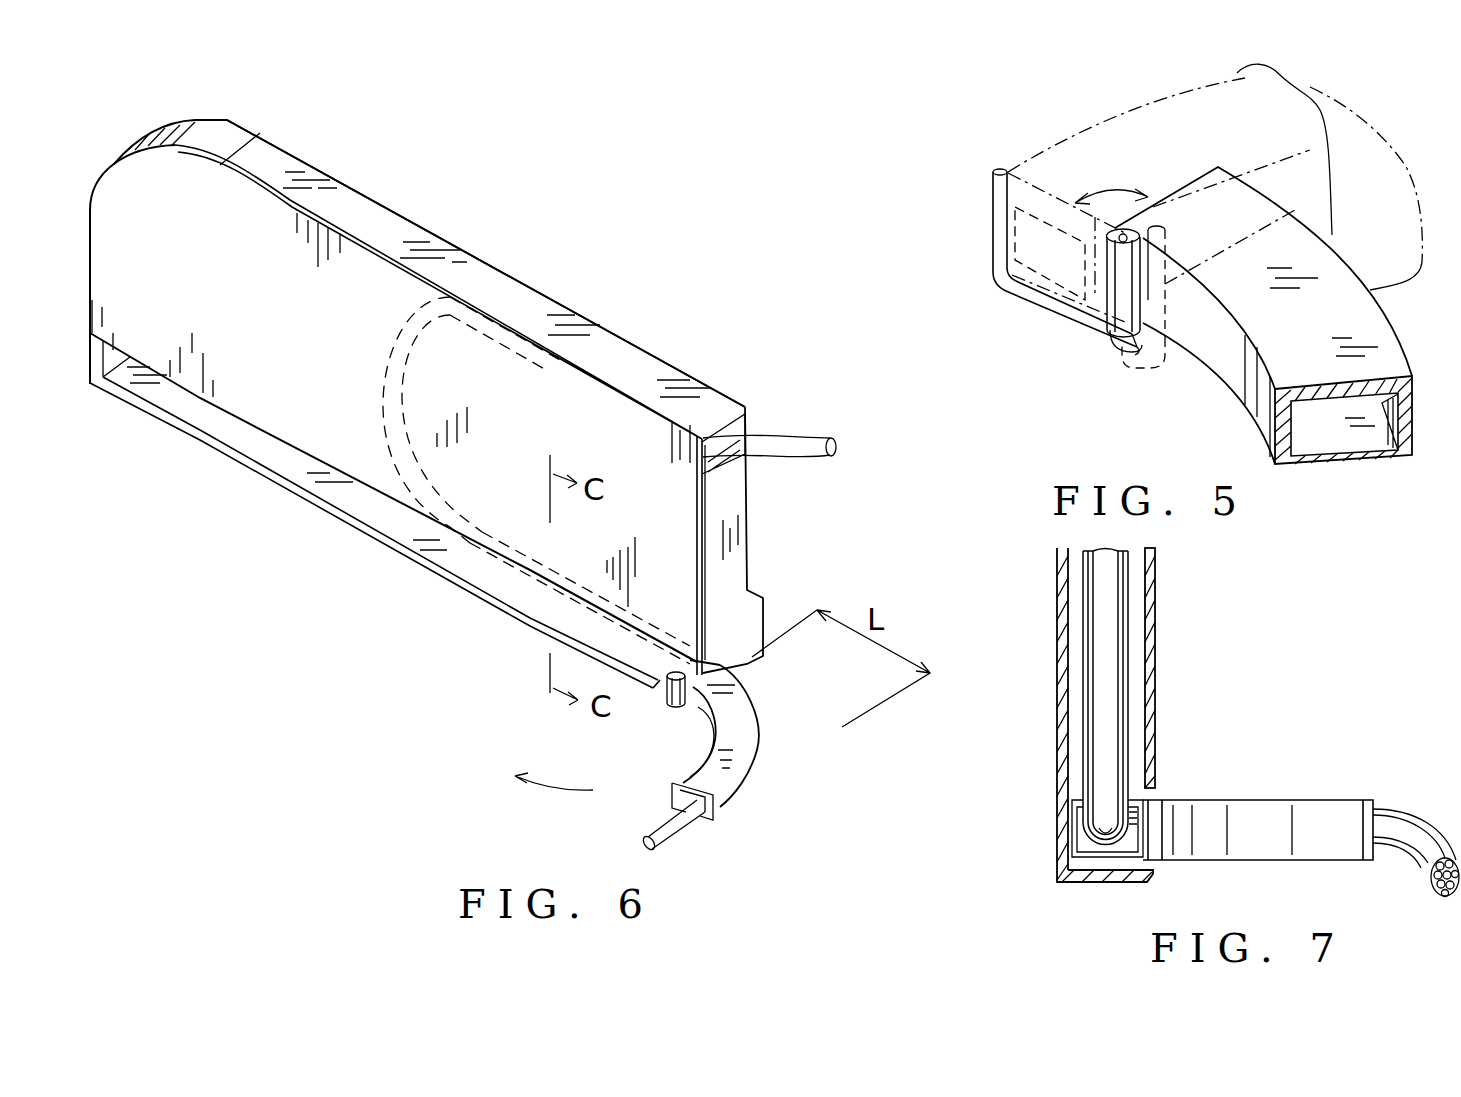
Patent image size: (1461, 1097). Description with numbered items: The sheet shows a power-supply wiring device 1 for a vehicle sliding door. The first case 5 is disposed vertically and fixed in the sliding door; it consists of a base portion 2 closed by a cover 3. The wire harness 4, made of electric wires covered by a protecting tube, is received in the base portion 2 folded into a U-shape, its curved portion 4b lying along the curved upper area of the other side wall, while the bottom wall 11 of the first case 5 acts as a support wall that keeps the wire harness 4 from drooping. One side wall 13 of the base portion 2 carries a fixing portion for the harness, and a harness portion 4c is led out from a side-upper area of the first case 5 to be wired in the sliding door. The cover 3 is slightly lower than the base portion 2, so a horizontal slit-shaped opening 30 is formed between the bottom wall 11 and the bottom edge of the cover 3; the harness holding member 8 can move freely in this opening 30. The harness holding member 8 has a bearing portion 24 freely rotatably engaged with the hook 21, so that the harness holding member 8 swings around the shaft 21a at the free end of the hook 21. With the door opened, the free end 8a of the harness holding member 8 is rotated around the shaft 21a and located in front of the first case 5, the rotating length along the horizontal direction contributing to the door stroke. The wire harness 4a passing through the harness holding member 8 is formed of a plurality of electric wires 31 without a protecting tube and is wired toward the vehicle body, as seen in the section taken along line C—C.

In FIG. 6, the housing 1 is at (160, 520).
In FIG. 6, the base portion 2 is at (667, 357).
In FIG. 7, the base portion 2 is at (1055, 593).
In FIG. 6, the cover 3 is at (600, 407).
In FIG. 7, the cover 3 is at (1157, 618).
In FIG. 6, the wire harness 4 is at (535, 348).
In FIG. 7, the wire harness 4 is at (1098, 702).
In FIG. 6, the wire harness in the harness holding member 4a is at (683, 827).
In FIG. 7, the wire harness in the harness holding member 4a is at (1407, 808).
In FIG. 6, the curved portion of the wire harness 4b is at (380, 387).
In FIG. 6, the harness portion 4c is at (777, 437).
In FIG. 6, the first case 5 is at (737, 245).
In FIG. 6, the harness holding member 8 is at (776, 723).
In FIG. 5, the harness holding member 8 is at (1421, 264).
In FIG. 7, the harness holding member 8 is at (1273, 797).
In FIG. 6, the free end of the harness holding member 8a is at (673, 793).
In FIG. 6, the bottom wall 11 is at (353, 527).
In FIG. 6, the one side wall 13 is at (733, 523).
In FIG. 5, the hook 21 is at (993, 220).
In FIG. 6, the shaft 21a is at (665, 680).
In FIG. 5, the shaft 21a is at (1130, 350).
In FIG. 5, the bearing portion 24 is at (1117, 290).
In FIG. 6, the opening 30 is at (280, 461).
In FIG. 6, the electric wires 31 is at (640, 845).